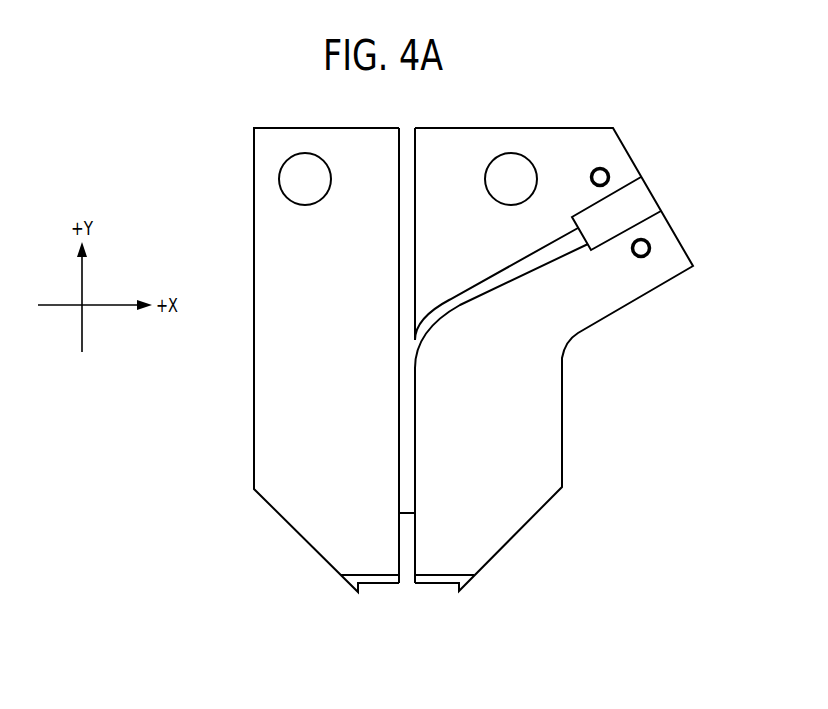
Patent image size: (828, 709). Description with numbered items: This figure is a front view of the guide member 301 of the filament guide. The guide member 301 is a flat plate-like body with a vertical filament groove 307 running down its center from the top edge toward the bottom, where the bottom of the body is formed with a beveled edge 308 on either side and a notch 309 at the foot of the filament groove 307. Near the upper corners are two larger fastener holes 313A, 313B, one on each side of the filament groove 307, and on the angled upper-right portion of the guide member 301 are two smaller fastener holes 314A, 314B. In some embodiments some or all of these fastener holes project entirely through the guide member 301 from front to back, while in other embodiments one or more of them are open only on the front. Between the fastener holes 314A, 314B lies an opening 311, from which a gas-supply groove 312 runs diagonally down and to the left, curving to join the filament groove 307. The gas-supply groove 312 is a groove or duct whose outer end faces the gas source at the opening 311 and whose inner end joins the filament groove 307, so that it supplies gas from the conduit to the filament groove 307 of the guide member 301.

The guide member 301 is at (290, 549).
The filament groove 307 is at (408, 290).
The beveled edge 308 is at (346, 582).
The notch 309 is at (409, 599).
The opening 311 is at (635, 202).
The gas-supply groove 312 is at (482, 293).
The fastener hole 313A is at (305, 160).
The fastener hole 313B is at (512, 162).
The fastener hole 314A is at (602, 146).
The fastener hole 314B is at (647, 275).